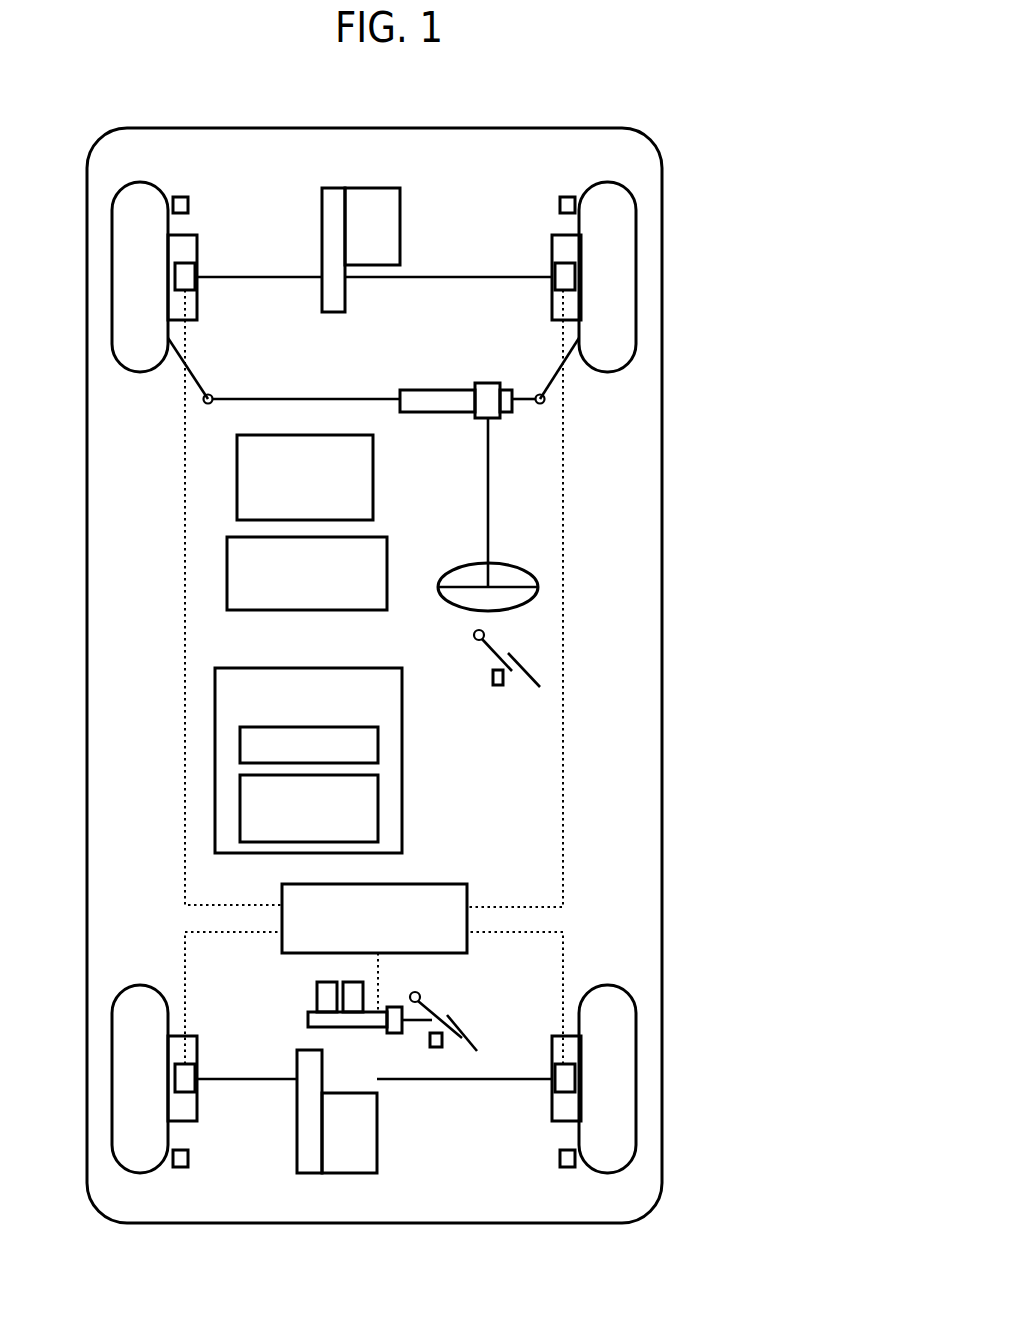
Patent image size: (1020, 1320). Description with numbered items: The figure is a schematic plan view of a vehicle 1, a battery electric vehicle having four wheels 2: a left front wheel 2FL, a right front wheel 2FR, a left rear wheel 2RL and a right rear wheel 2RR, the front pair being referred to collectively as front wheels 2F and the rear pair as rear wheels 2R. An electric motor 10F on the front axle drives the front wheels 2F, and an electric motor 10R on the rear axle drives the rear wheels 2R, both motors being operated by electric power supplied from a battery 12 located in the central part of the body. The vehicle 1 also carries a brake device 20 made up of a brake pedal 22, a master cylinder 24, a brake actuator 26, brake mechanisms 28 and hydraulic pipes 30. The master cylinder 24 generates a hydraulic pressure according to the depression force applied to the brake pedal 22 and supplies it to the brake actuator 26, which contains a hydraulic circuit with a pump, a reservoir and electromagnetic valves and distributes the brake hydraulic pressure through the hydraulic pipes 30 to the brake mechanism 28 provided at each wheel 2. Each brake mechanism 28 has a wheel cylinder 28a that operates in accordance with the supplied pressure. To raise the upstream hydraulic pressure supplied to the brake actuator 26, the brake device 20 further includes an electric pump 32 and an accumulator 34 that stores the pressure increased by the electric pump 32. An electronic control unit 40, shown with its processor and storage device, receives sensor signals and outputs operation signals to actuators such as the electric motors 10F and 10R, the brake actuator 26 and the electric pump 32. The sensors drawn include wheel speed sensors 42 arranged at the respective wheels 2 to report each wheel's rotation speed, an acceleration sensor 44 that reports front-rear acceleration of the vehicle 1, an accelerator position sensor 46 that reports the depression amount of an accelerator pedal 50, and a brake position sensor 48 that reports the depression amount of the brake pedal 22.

The vehicle 1 is at (662, 118).
The wheels 2 is at (450, 674).
The front wheels 2F is at (449, 305).
The rear wheels 2R is at (450, 1044).
The left front wheel 2FL is at (137, 373).
The right front wheel 2FR is at (637, 290).
The left rear wheel 2RL is at (138, 984).
The right rear wheel 2RR is at (637, 1090).
The electric motor 10F is at (381, 188).
The electric motor 10R is at (378, 1173).
The battery 12 is at (373, 480).
The brake device 20 is at (401, 893).
The brake pedal 22 is at (460, 1031).
The master cylinder 24 is at (346, 1028).
The brake actuator 26 is at (413, 883).
The brake mechanisms 28 is at (205, 303).
The wheel cylinder 28a is at (190, 272).
The hydraulic pipes 30 is at (185, 790).
The electric pump 32 is at (317, 994).
The accumulator 34 is at (392, 1006).
The electronic control unit (ECU) 40 is at (363, 668).
The wheel speed sensors 42 is at (181, 196).
The acceleration sensor 44 is at (387, 548).
The accelerator position sensor 46 is at (496, 686).
The brake position sensor 48 is at (436, 1048).
The accelerator pedal 50 is at (527, 674).